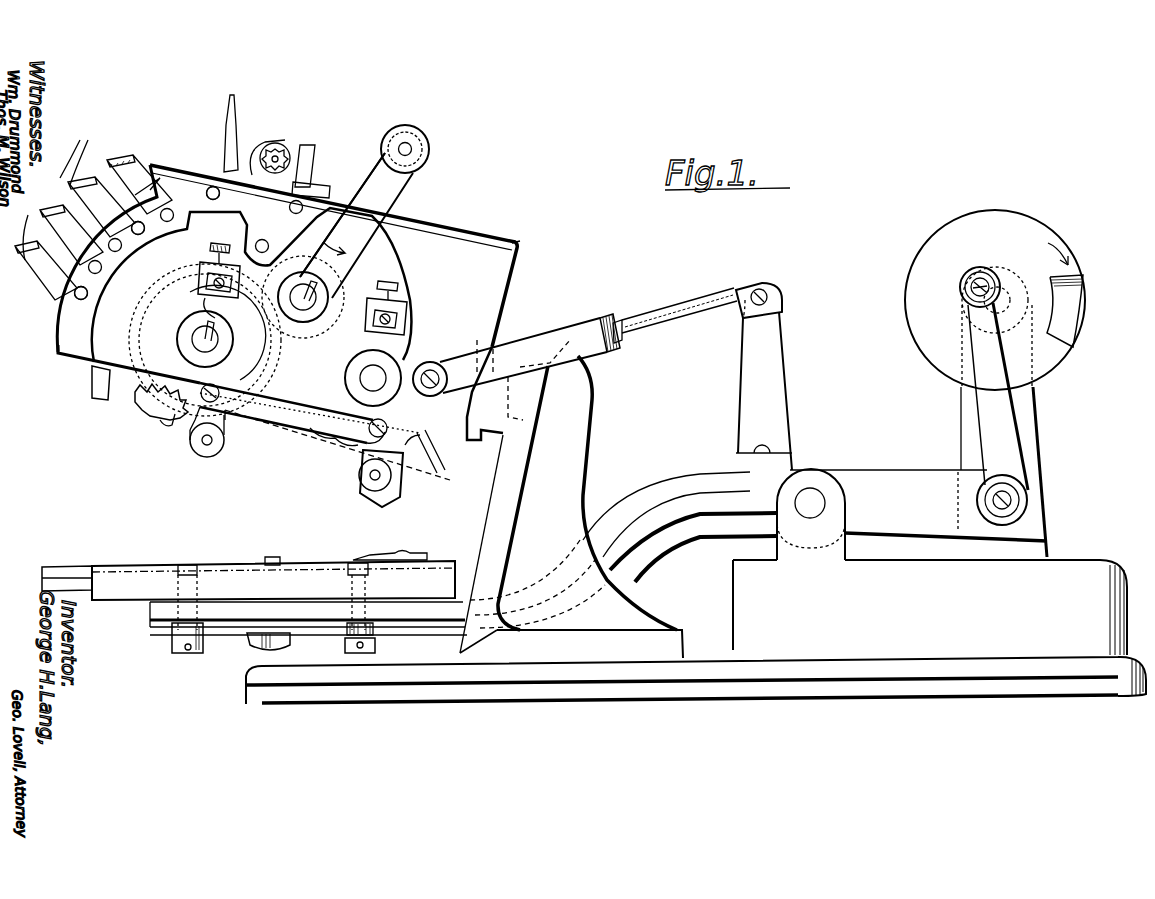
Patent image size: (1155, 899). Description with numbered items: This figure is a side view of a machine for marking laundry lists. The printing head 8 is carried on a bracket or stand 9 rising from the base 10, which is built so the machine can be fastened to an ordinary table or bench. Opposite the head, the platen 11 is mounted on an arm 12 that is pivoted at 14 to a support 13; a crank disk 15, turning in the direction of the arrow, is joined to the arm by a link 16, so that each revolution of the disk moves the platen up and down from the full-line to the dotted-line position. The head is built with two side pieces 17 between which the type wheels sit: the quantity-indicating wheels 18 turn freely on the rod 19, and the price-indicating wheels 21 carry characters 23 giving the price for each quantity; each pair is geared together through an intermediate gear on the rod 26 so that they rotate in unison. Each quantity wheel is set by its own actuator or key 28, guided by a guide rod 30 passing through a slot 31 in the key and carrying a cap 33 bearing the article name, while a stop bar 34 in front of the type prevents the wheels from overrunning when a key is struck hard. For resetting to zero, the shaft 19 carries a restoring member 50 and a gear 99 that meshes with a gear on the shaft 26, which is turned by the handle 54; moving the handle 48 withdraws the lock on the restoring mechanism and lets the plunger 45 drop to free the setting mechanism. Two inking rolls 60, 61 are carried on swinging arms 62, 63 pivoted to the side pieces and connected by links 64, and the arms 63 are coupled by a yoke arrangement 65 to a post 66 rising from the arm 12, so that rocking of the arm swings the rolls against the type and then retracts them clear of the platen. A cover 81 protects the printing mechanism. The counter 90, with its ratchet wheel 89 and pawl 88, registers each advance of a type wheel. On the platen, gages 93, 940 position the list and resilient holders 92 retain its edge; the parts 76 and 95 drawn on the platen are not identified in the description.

The printing head 8 is at (505, 280).
The bracket or stand 9 is at (503, 510).
The base 10 is at (740, 680).
The platen 11 is at (245, 547).
The arm 12 is at (705, 453).
The support 13 is at (915, 584).
The pivot 14 is at (815, 500).
The crank disk 15 is at (1030, 237).
The link 16 is at (995, 410).
The side pieces 17 is at (458, 248).
The quantity-indicating wheels 18 is at (158, 408).
The rod 19 is at (215, 352).
The price-indicating wheels 21 is at (350, 442).
The characters 23 is at (432, 470).
The rod 26 is at (310, 300).
The actuator 28 is at (148, 180).
The guide rod 30 is at (144, 236).
The slot 31 is at (150, 206).
The cap 33 is at (105, 170).
The stop bar 34 is at (92, 390).
The plunger 45 is at (160, 410).
The handle 48 is at (235, 135).
The restoring member 50 is at (160, 318).
The handle 54 is at (395, 205).
The inking roll 60 is at (200, 455).
The inking roll 61 is at (362, 497).
The swinging arm 62 is at (240, 445).
The swinging arm 63 is at (405, 352).
The links 64 is at (308, 440).
The yoke arrangement 65 is at (570, 330).
The post 66 is at (768, 360).
The guide block 76 is at (190, 565).
The cover 81 is at (520, 240).
The pawl 88 is at (272, 143).
The ratchet wheel 89 is at (285, 161).
The counter 90 is at (305, 146).
The resilient holders 92 is at (390, 553).
The gage 93 is at (300, 550).
The end cap 95 is at (75, 568).
The gear 99 is at (160, 395).
The gage 940 is at (417, 555).